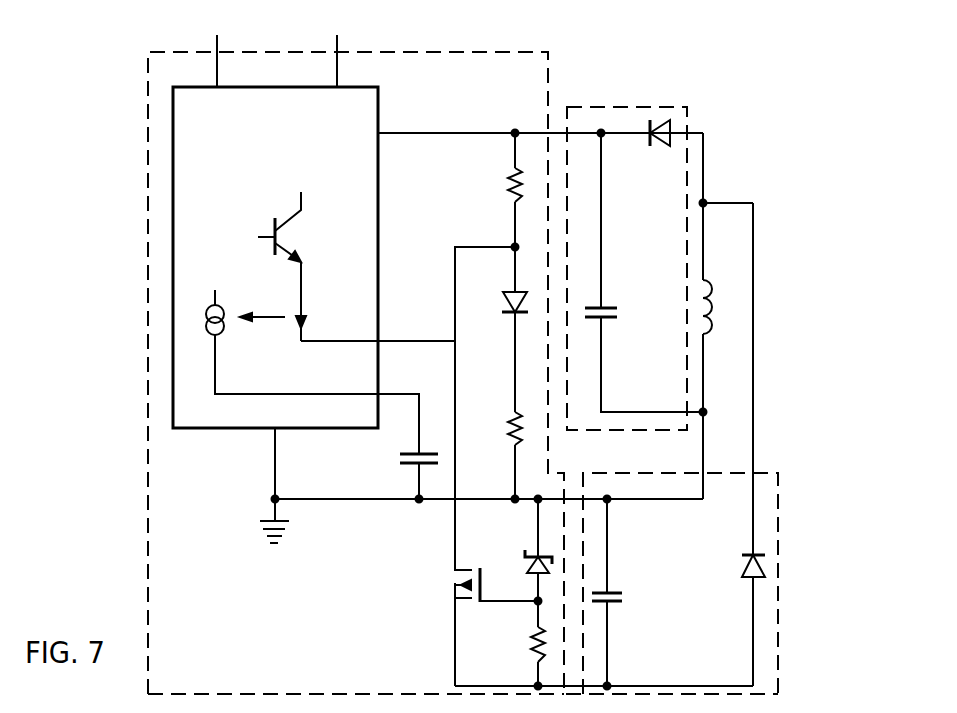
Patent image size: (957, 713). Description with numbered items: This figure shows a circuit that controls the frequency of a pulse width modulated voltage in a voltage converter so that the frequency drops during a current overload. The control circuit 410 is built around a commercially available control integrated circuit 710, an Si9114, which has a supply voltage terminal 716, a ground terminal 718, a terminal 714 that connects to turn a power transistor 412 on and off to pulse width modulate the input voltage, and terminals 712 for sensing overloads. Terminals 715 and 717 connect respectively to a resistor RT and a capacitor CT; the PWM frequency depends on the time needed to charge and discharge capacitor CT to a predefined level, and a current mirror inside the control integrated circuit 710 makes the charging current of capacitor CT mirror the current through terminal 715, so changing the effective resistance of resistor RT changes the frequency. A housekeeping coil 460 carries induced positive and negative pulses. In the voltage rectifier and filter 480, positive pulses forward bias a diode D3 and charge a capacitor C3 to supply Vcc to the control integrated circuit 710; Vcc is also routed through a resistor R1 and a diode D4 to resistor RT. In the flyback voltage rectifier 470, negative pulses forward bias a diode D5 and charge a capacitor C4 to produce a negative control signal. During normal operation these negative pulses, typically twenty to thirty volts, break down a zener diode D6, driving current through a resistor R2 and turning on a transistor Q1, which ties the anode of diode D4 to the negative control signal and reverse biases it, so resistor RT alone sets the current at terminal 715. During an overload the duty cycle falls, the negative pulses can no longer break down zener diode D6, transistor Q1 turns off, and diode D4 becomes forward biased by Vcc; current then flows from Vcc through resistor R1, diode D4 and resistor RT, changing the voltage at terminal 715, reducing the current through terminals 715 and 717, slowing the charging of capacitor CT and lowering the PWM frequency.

The control circuit 410 is at (147, 550).
The transistor 412 is at (363, 48).
The housekeeping coil 460 is at (722, 318).
The flyback voltage rectifier 470 is at (778, 648).
The voltage rectifier and filter 480 is at (631, 110).
The control integrated circuit 710 is at (246, 196).
The terminals for sensing overloads 712 is at (222, 85).
The terminal for connecting to a power transistor 714 is at (342, 85).
The terminal 715 is at (378, 341).
The supply voltage terminal 716 is at (380, 136).
The terminal 717 is at (378, 395).
The ground terminal 718 is at (275, 428).
The resistor R1 is at (508, 180).
The resistor R2 is at (530, 641).
The resistor RT is at (507, 425).
The capacitor CT is at (410, 468).
The capacitor C3 is at (610, 305).
The capacitor C4 is at (612, 590).
The diode D3 is at (660, 147).
The diode D4 is at (501, 302).
The diode D5 is at (742, 560).
The zener diode D6 is at (525, 566).
The transistor Q1 is at (448, 590).